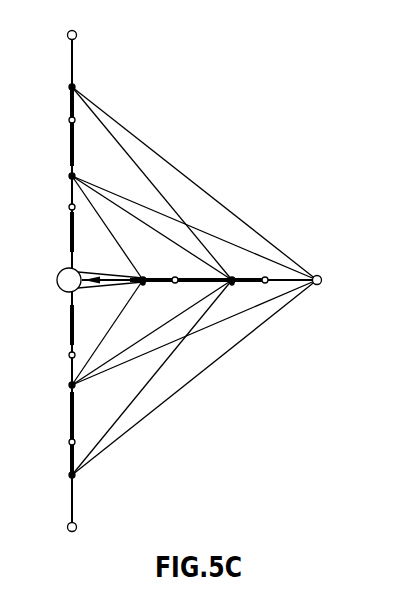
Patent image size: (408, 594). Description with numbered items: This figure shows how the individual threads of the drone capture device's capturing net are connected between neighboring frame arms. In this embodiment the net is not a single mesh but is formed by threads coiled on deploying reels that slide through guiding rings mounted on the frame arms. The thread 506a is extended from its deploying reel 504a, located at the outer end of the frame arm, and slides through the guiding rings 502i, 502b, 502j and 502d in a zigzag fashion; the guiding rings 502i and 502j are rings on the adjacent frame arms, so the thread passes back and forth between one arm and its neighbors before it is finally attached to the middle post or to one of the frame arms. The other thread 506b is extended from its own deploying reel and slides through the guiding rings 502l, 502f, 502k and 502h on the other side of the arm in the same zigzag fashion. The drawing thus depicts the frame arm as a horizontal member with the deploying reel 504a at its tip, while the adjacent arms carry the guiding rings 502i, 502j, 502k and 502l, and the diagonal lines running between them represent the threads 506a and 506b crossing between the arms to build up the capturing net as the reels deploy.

The guiding ring 502b is at (234, 283).
The guiding ring 502d is at (145, 283).
The guiding ring 502f is at (233, 279).
The guiding ring 502h is at (144, 279).
The guiding ring 502i is at (75, 475).
The guiding ring 502j is at (75, 385).
The guiding ring 502k is at (75, 176).
The guiding ring 502l is at (75, 87).
The deploying reel 504a is at (312, 277).
The thread 506a is at (215, 362).
The thread 506b is at (215, 199).